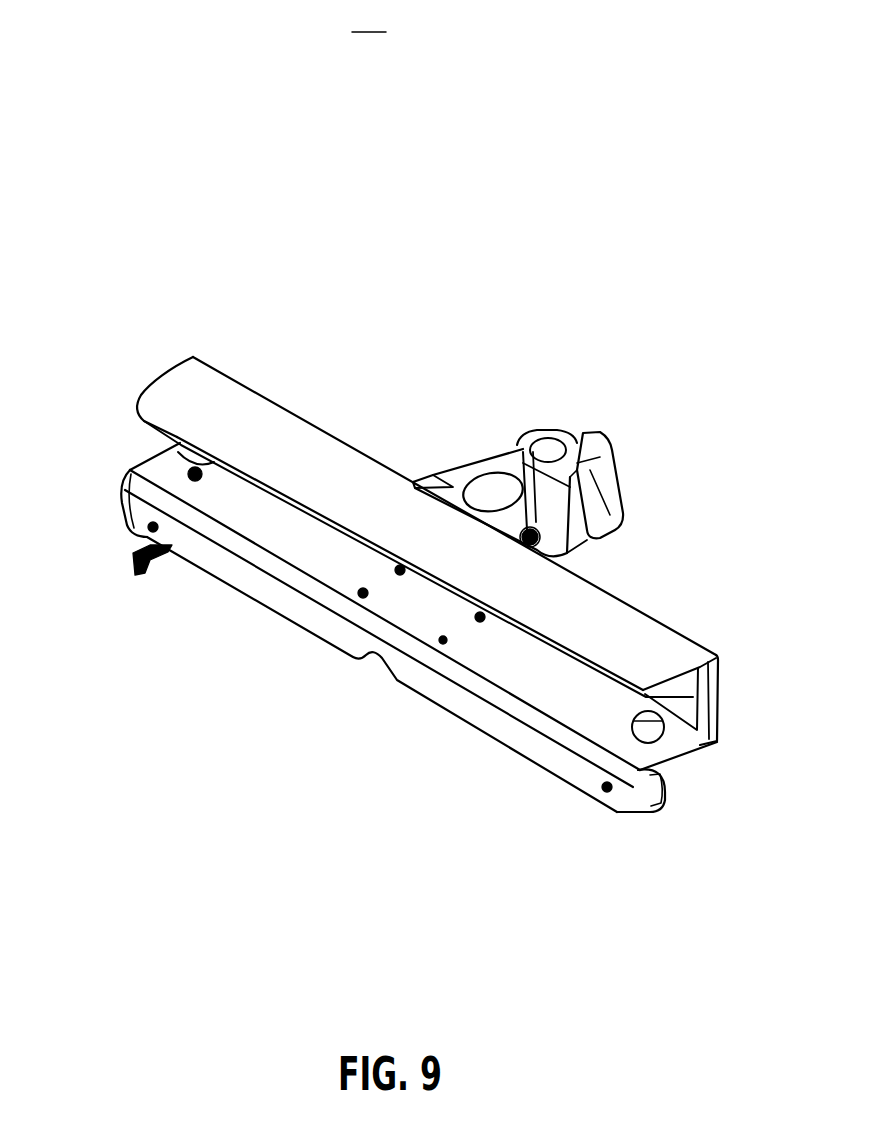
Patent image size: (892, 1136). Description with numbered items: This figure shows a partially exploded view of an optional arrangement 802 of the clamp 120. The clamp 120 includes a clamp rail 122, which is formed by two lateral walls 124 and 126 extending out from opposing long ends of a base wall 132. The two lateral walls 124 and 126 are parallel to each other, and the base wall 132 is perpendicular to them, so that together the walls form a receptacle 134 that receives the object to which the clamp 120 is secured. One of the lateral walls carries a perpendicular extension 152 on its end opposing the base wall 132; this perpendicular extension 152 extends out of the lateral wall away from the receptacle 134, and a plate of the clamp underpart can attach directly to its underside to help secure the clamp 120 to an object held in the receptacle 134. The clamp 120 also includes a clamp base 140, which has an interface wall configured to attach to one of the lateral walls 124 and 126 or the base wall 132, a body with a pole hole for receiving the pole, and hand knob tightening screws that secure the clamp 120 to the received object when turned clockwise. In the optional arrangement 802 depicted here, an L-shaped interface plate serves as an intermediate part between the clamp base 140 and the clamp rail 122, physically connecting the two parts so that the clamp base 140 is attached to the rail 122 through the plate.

The optional arrangement 802 is at (369, 21).
The clamp 120 is at (121, 182).
The clamp rail 122 is at (268, 340).
The lateral wall 124 is at (669, 772).
The lateral wall 126 is at (349, 478).
The base wall 132 is at (720, 708).
The receptacle 134 is at (708, 788).
The clamp base 140 is at (515, 358).
The perpendicular extension 152 is at (443, 700).